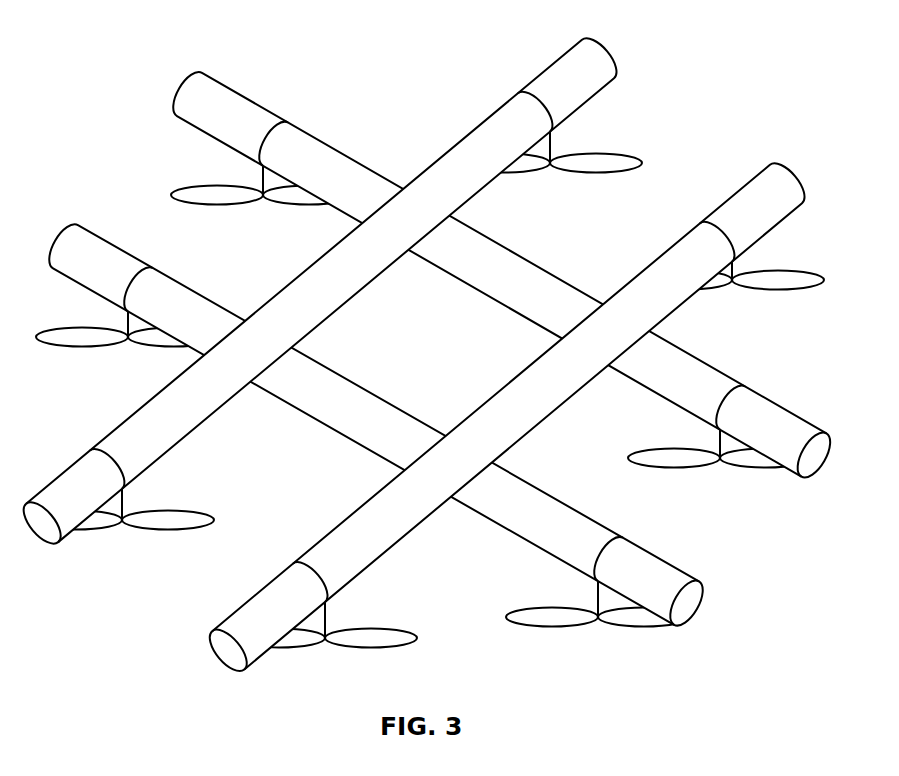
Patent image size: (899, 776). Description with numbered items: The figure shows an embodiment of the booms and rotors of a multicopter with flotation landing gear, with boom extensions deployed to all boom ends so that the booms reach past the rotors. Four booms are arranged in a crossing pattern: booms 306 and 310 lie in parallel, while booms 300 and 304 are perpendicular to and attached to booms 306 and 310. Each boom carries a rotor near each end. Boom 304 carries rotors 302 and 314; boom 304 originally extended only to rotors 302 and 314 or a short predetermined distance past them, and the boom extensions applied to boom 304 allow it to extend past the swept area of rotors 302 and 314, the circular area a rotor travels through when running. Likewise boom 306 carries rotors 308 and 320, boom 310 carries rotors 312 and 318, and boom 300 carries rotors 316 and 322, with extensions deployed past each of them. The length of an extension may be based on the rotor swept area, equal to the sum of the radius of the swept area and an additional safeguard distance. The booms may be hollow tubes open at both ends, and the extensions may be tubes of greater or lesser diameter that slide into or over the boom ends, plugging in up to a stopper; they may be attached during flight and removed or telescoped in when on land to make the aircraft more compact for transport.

The boom 300 is at (57, 241).
The rotor 302 is at (220, 186).
The boom 304 is at (177, 92).
The boom 306 is at (607, 53).
The rotor 308 is at (597, 153).
The boom 310 is at (795, 177).
The rotor 312 is at (780, 269).
The rotor 314 is at (678, 452).
The rotor 316 is at (556, 608).
The rotor 318 is at (372, 630).
The rotor 320 is at (169, 511).
The rotor 322 is at (87, 329).